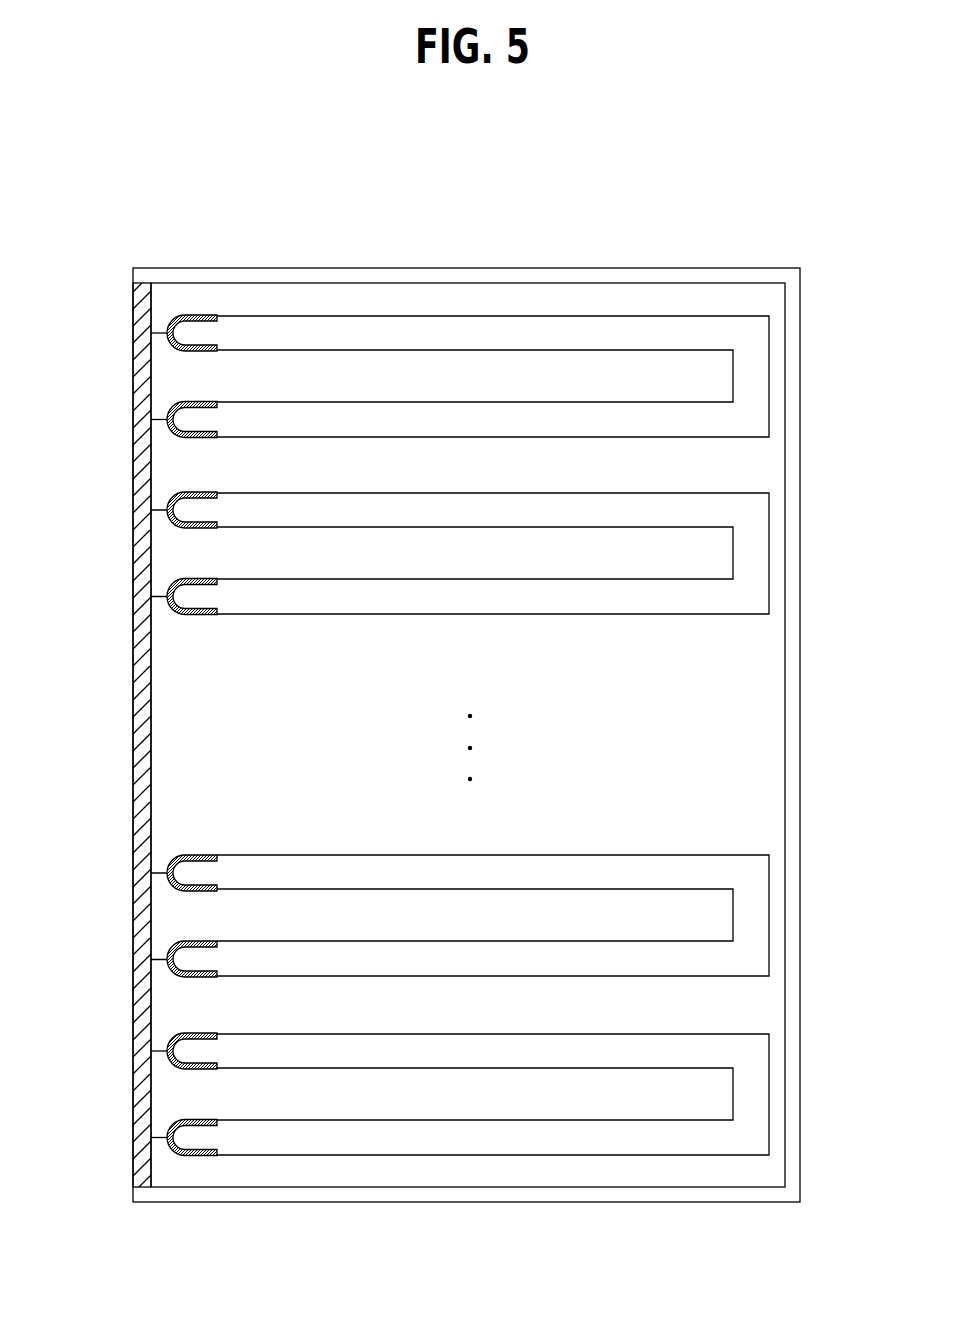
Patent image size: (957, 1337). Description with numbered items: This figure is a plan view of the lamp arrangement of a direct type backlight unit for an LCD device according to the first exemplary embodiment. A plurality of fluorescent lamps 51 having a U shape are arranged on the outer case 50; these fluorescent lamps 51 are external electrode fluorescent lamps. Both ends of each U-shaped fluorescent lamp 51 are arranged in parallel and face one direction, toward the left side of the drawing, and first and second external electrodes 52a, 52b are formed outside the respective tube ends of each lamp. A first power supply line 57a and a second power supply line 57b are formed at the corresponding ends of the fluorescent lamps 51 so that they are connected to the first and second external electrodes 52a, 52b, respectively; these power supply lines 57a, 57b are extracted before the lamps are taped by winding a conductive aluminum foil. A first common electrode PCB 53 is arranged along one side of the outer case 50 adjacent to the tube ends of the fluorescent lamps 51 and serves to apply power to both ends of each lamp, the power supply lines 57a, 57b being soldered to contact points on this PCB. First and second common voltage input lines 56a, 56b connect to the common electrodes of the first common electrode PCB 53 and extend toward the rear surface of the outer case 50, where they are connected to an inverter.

The outer case 50 is at (470, 275).
The fluorescent lamp 51 is at (752, 917).
The first external electrode 52a is at (197, 304).
The second external electrode 52b is at (178, 397).
The first common electrode PCB 53 is at (133, 502).
The first common voltage input line 56a is at (151, 1052).
The second common voltage input line 56b is at (151, 1137).
The first power supply line 57a is at (162, 333).
The second power supply line 57b is at (162, 424).